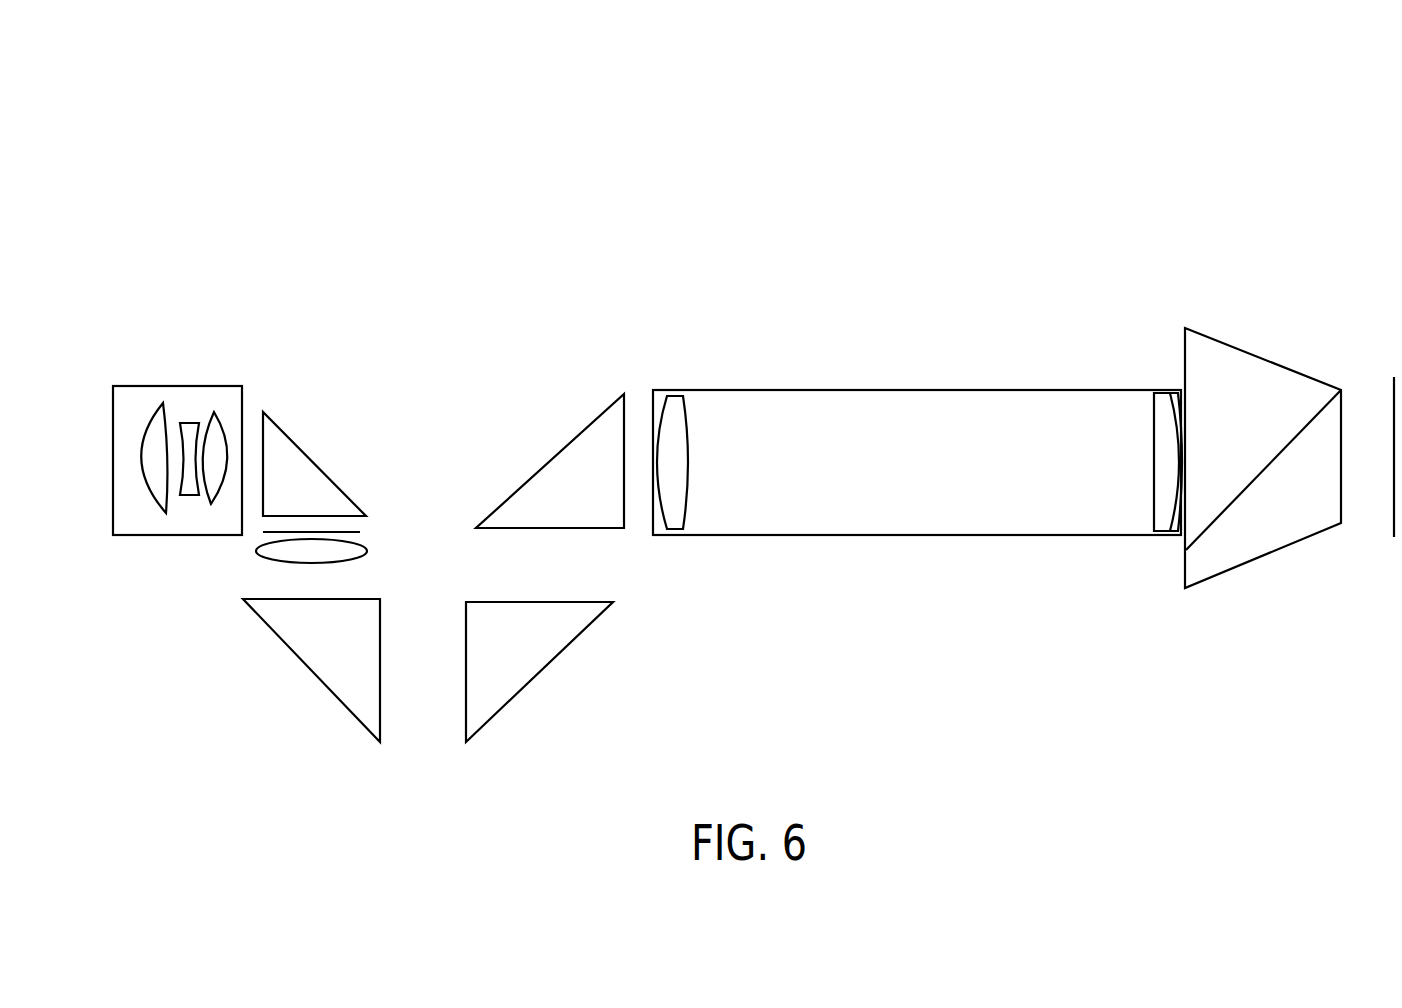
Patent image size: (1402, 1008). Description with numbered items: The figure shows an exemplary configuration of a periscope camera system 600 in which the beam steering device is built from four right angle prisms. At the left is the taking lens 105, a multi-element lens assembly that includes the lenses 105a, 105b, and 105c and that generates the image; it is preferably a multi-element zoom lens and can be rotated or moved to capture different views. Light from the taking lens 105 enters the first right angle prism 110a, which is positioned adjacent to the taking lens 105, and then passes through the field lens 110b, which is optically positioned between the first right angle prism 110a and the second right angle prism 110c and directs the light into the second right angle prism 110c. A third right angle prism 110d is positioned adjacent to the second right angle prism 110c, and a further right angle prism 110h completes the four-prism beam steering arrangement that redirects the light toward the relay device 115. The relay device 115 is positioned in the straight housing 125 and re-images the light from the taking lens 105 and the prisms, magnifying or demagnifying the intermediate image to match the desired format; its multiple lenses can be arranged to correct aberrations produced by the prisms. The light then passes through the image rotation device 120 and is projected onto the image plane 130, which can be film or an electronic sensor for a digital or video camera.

The periscope camera system 600 is at (1277, 126).
The taking lens 105 is at (160, 536).
The lens 105a is at (163, 401).
The lens 105b is at (214, 411).
The lens 105c is at (190, 421).
The first right angle prism 110a is at (336, 485).
The field lens 110b is at (367, 548).
The second right angle prism 110c is at (313, 673).
The third right angle prism 110d is at (563, 650).
The right angle prism 110h is at (550, 460).
The relay device 115 is at (938, 537).
The image rotation device 120 is at (1212, 338).
The straight housing 125 is at (932, 390).
The image plane 130 is at (1393, 388).